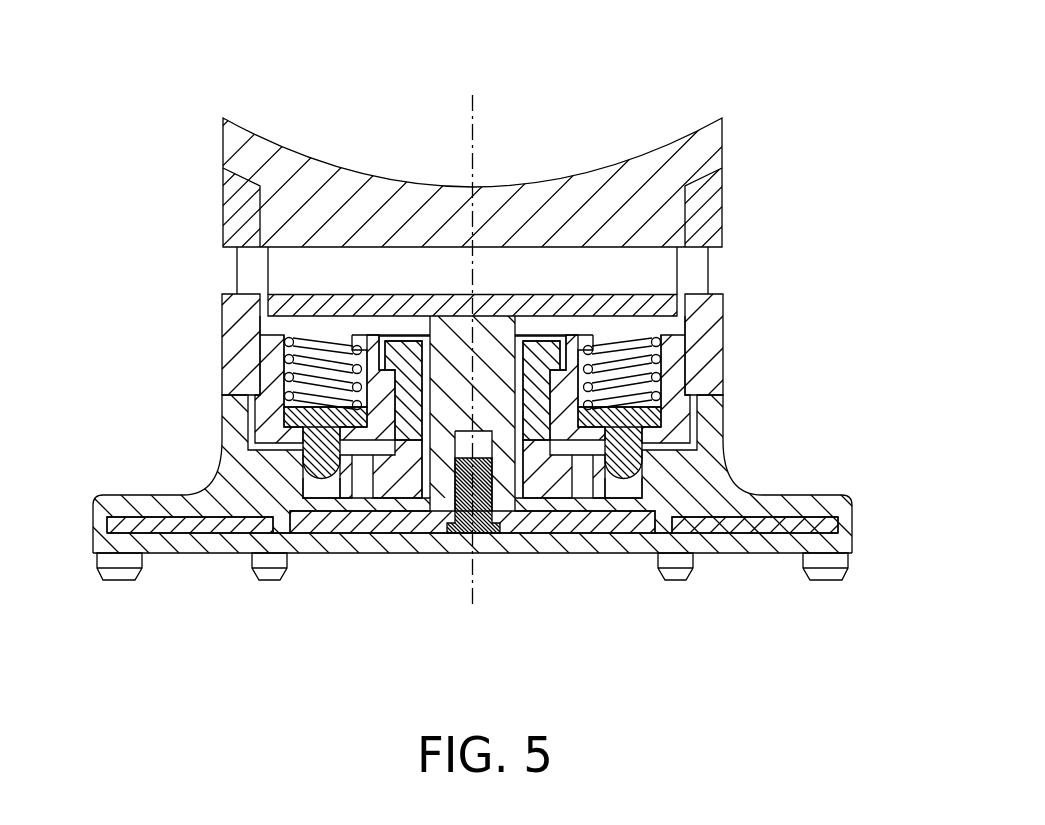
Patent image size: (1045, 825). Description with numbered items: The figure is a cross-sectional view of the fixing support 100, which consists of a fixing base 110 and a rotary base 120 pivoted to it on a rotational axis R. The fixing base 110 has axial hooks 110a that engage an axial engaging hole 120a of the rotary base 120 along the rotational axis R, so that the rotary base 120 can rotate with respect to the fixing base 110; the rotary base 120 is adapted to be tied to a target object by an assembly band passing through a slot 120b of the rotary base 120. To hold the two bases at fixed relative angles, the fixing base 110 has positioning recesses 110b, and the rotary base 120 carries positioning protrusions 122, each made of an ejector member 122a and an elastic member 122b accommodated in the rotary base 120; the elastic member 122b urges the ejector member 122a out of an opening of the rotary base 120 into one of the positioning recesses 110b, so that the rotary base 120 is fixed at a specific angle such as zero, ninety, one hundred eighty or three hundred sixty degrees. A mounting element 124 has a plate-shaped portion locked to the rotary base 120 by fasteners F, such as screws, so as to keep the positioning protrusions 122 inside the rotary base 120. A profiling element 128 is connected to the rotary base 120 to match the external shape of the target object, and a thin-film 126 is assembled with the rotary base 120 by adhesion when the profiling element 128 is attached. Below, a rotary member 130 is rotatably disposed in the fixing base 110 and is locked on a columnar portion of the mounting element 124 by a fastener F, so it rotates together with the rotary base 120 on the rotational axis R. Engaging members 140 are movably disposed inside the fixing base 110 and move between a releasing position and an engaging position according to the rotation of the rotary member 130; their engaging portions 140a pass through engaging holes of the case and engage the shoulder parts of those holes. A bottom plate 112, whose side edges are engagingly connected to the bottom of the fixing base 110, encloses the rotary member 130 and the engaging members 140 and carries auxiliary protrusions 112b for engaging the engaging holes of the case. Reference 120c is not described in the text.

The fixing support 100 is at (509, 320).
The fixing base 110 is at (509, 507).
The axial hooks 110a is at (505, 490).
The positioning recesses 110b is at (638, 482).
The bottom plate 112 is at (205, 548).
The auxiliary protrusions 112b is at (275, 578).
The rotary base 120 is at (468, 363).
The axial engaging hole 120a is at (543, 384).
The slot 120b is at (716, 292).
The carrier lower portion 120c is at (640, 430).
The positioning protrusion 122 is at (539, 409).
The ejector member 122a is at (645, 425).
The elastic member 122b is at (662, 368).
The mounting element 124 is at (672, 318).
The thin-film 126 is at (638, 300).
The profiling element 128 is at (715, 150).
The rotary member 130 is at (333, 530).
The engaging members 140 is at (153, 520).
The engaging portions 140a is at (117, 570).
The fastener F is at (440, 490).
The rotational axis R is at (487, 337).